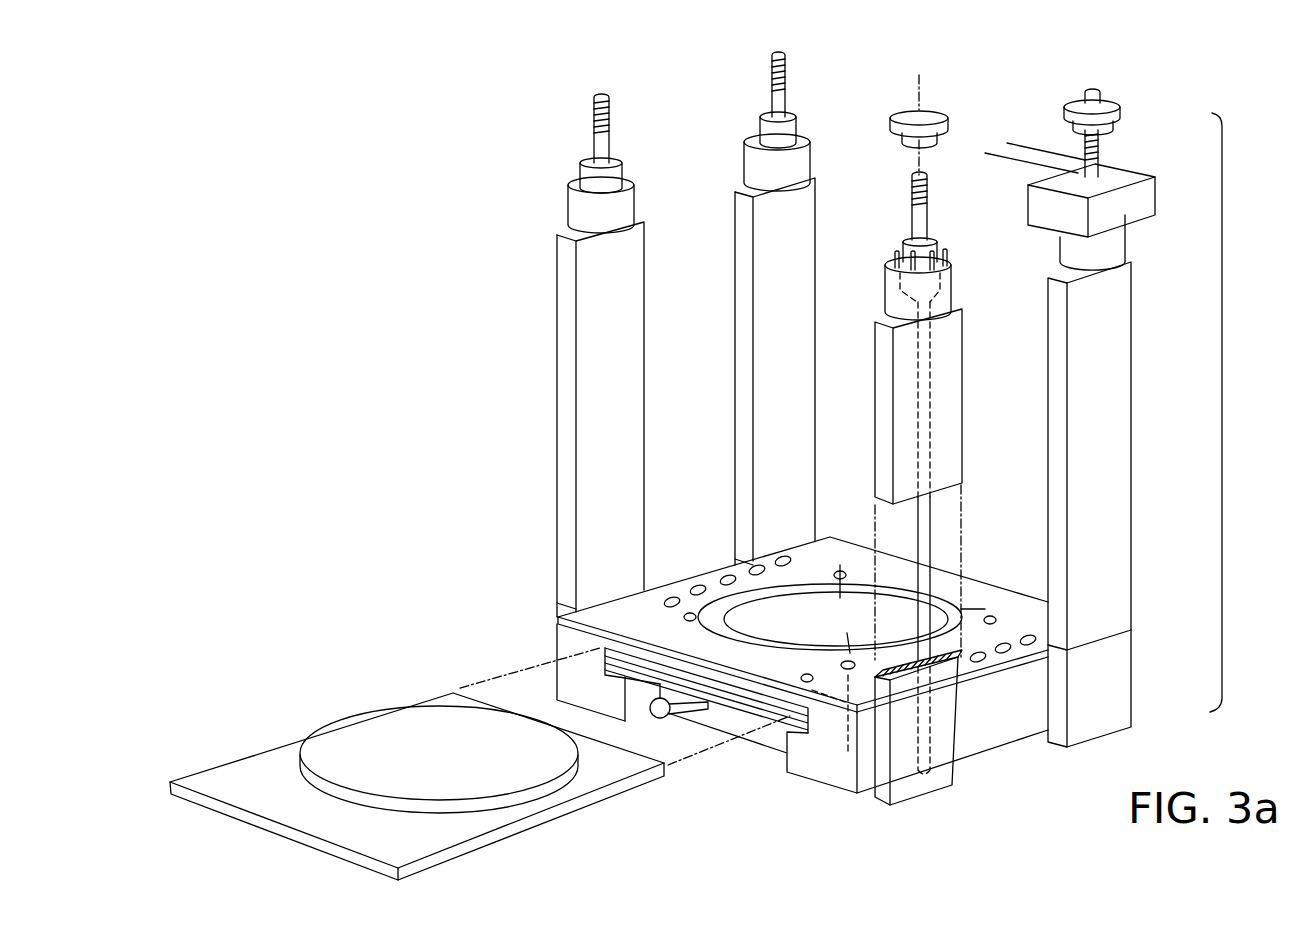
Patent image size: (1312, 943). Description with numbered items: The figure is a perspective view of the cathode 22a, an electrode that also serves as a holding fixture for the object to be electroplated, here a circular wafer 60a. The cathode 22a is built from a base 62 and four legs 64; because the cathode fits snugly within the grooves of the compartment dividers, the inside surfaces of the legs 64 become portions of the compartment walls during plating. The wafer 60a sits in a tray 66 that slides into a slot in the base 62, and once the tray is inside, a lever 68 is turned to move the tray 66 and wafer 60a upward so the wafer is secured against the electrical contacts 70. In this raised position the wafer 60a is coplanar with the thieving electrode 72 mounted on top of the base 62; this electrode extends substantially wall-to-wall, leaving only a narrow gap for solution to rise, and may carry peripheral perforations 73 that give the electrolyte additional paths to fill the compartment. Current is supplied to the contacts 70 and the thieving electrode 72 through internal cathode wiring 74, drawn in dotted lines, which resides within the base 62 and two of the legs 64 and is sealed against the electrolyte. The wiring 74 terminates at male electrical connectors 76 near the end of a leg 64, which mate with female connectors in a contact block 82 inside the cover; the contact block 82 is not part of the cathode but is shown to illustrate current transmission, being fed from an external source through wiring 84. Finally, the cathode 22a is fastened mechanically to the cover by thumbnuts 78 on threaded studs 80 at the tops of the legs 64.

The cathode 22a is at (1223, 415).
The circular wafer 60a is at (812, 600).
The cathode base 62 is at (993, 735).
The cathode legs 64 is at (630, 373).
The tray 66 is at (280, 762).
The lever 68 is at (690, 712).
The electrical contacts 70 is at (690, 613).
The thieving electrode 72 is at (648, 615).
The peripheral perforations 73 is at (782, 555).
The internal cathode wiring 74 is at (932, 542).
The male electrical connectors 76 is at (950, 248).
The thumbnuts 78 is at (1082, 100).
The threaded studs 80 is at (912, 213).
The contact block 82 is at (1123, 172).
The wiring 84 is at (1035, 157).